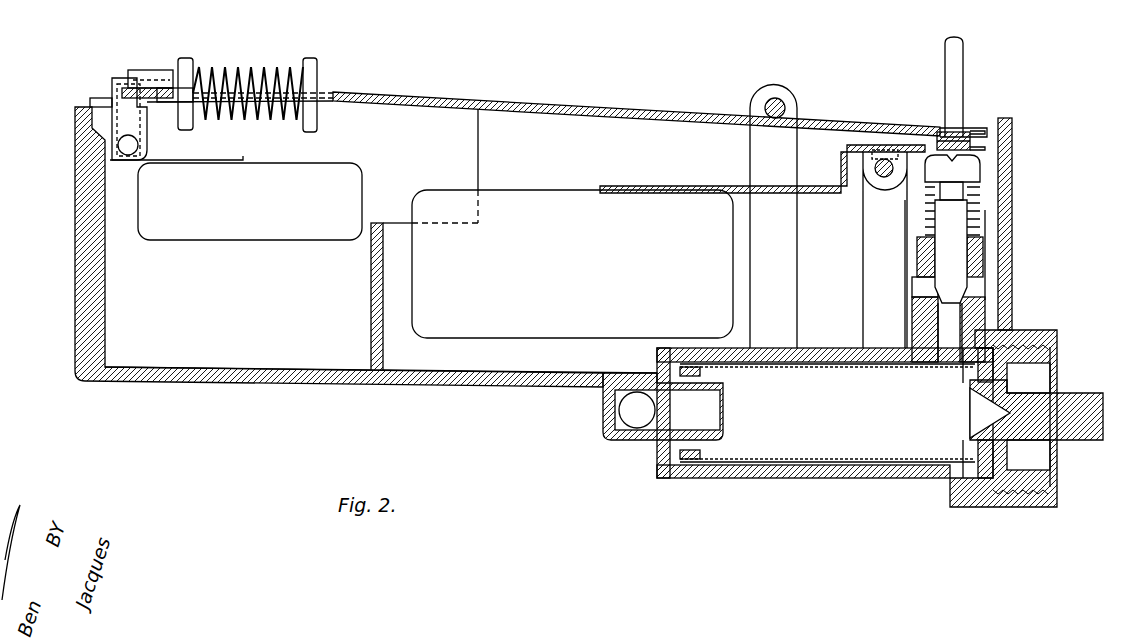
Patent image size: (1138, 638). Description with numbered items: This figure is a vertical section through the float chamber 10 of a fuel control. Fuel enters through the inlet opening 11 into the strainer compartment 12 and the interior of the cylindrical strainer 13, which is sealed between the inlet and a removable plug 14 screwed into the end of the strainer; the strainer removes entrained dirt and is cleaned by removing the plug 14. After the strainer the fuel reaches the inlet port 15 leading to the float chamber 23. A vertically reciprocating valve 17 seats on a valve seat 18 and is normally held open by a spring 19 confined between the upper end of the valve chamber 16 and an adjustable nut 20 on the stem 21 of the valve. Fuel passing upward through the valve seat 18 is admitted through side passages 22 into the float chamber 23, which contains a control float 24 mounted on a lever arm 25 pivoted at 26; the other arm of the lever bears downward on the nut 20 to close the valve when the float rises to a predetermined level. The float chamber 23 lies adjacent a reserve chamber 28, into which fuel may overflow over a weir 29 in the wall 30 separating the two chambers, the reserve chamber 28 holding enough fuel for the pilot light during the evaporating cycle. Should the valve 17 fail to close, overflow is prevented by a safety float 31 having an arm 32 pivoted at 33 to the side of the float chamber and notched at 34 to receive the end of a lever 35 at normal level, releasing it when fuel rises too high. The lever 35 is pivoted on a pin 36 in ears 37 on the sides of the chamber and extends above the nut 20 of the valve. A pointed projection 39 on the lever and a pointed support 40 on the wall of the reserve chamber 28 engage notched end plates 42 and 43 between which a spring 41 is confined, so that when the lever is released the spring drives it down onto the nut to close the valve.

The float chamber 10 is at (130, 384).
The inlet opening 11 is at (632, 408).
The strainer compartment 12 is at (738, 478).
The cylindrical strainer 13 is at (812, 466).
The removable plug 14 is at (1010, 455).
The inlet port 15 is at (960, 336).
The valve chamber 16 is at (985, 264).
The vertically reciprocating valve 17 is at (955, 243).
The valve seat 18 is at (985, 306).
The spring 19 is at (970, 190).
The adjustable nut 20 is at (975, 170).
The stem 21 is at (963, 72).
The side passages 22 is at (918, 285).
The float chamber 23 is at (471, 363).
The control float 24 is at (545, 215).
The lever arm 25 is at (740, 187).
The pivot 26 is at (875, 168).
The reserve chamber 28 is at (262, 356).
The weir 29 is at (380, 222).
The wall 30 is at (371, 298).
The safety float 31 is at (228, 241).
The arm 32 is at (112, 100).
The pivot 33 is at (128, 152).
The notch 34 is at (140, 90).
The lever 35 is at (400, 95).
The pin 36 is at (786, 108).
The ears 37 is at (782, 94).
The pointed projection 39 is at (322, 94).
The pointed support 40 is at (173, 75).
The spring 41 is at (240, 72).
The end plate 42 is at (190, 62).
The end plate 43 is at (316, 64).